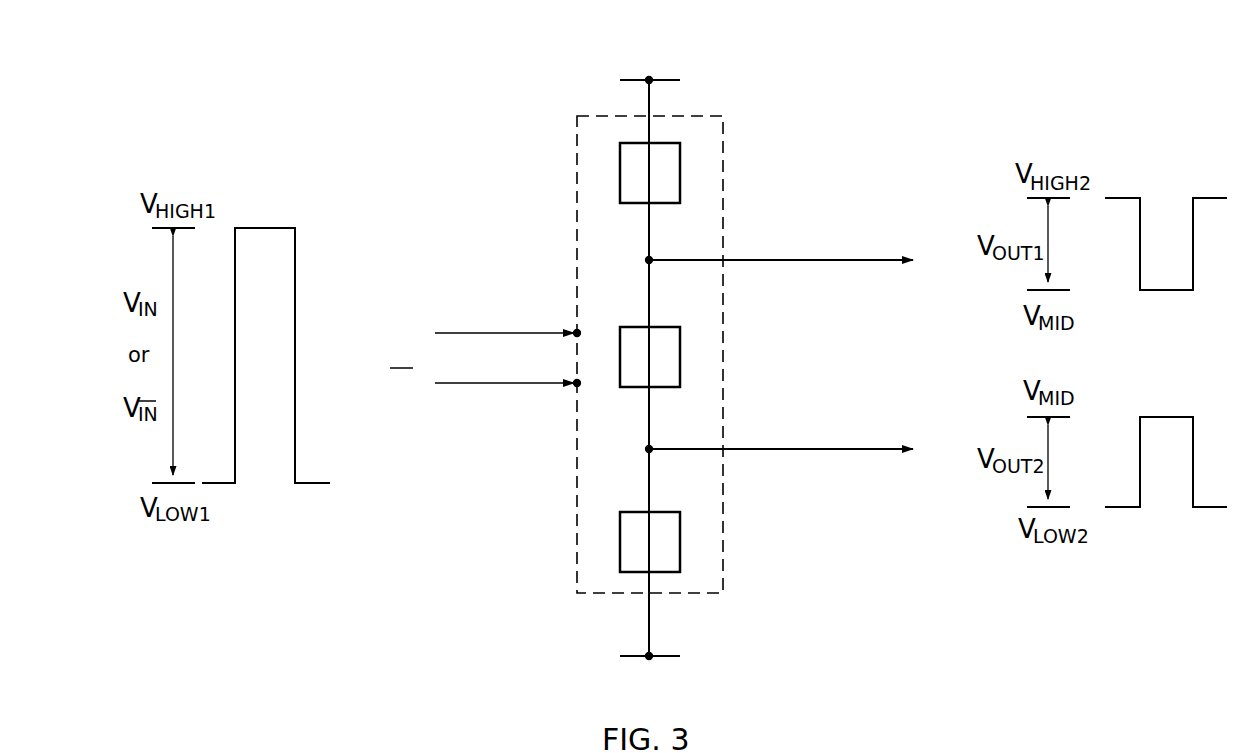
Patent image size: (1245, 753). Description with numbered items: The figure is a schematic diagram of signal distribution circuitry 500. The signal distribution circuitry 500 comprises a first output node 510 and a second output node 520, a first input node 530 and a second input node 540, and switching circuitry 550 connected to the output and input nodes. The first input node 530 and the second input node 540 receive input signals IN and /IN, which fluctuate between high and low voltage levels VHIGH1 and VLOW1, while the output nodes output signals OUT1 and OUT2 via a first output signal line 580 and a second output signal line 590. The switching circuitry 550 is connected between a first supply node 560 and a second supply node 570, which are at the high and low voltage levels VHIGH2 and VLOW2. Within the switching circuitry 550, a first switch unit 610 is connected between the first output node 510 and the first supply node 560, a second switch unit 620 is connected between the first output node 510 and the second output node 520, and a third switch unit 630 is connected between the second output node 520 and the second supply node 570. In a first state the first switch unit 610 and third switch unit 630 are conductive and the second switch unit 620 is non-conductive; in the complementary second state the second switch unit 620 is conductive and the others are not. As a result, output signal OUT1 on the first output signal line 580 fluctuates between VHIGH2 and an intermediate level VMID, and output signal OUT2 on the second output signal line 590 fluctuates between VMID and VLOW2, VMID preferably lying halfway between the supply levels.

The signal distribution circuitry 500 is at (332, 88).
The first output node 510 is at (646, 260).
The second output node 520 is at (646, 449).
The first input node 530 is at (577, 333).
The second input node 540 is at (577, 383).
The switching circuitry 550 is at (577, 142).
The first supply node 560 is at (650, 84).
The second supply node 570 is at (651, 653).
The first output signal line 580 is at (750, 260).
The second output signal line 590 is at (750, 449).
The first switch unit 610 is at (680, 173).
The second switch unit 620 is at (680, 357).
The third switch unit 630 is at (680, 542).